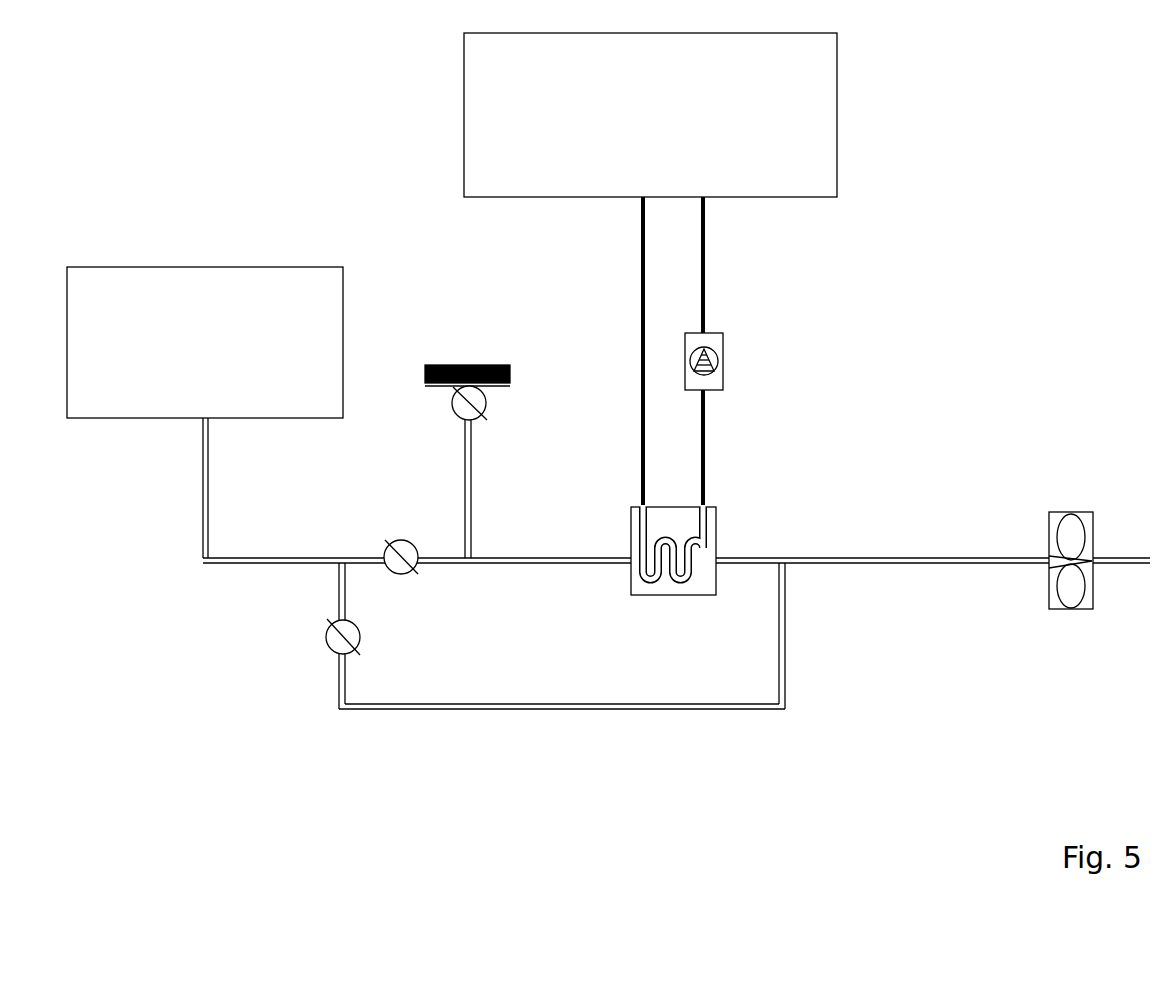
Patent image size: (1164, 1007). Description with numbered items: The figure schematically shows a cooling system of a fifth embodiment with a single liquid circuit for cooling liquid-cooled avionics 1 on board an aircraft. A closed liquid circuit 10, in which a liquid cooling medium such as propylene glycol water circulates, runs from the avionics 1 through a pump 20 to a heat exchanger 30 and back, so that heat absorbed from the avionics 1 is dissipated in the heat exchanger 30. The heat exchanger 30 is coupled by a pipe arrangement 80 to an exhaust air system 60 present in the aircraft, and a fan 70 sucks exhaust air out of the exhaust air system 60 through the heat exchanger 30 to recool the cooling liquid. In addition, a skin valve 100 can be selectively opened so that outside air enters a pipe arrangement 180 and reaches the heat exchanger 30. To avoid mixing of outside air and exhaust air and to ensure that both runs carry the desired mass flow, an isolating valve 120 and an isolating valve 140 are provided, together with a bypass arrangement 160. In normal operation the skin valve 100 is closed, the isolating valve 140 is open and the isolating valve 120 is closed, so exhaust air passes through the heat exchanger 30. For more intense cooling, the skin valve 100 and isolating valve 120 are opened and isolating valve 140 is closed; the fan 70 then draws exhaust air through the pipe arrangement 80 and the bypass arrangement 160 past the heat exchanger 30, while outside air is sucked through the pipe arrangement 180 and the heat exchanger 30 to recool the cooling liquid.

The avionics 1 is at (838, 93).
The liquid circuit 10 is at (713, 284).
The pump 20 is at (725, 368).
The heat exchanger 30 is at (717, 530).
The exhaust air system 60 is at (343, 313).
The fan 70 is at (1063, 512).
The pipe arrangement 80 is at (225, 565).
The skin valve 100 is at (453, 418).
The isolating valve 120 is at (327, 647).
The isolating valve 140 is at (413, 573).
The bypass arrangement 160 is at (483, 709).
The pipe arrangement 180 is at (547, 566).